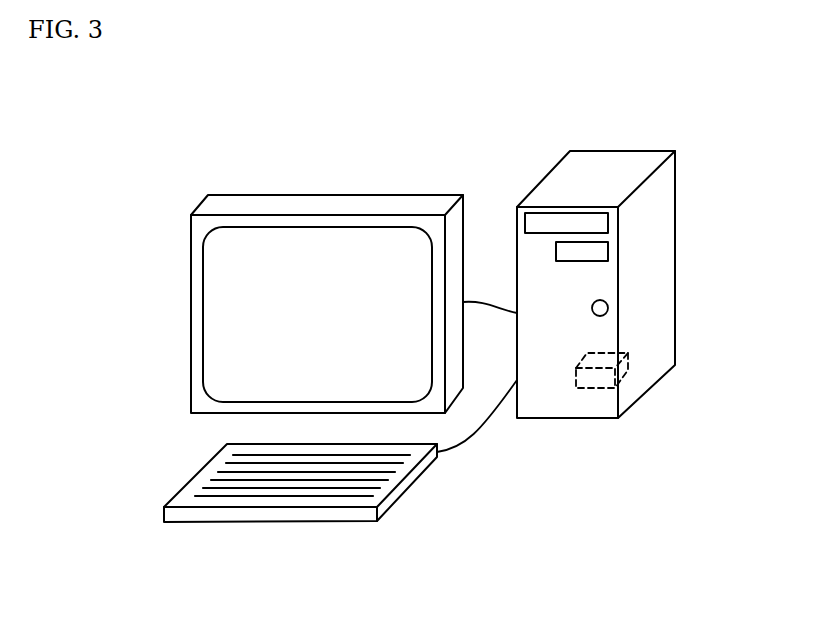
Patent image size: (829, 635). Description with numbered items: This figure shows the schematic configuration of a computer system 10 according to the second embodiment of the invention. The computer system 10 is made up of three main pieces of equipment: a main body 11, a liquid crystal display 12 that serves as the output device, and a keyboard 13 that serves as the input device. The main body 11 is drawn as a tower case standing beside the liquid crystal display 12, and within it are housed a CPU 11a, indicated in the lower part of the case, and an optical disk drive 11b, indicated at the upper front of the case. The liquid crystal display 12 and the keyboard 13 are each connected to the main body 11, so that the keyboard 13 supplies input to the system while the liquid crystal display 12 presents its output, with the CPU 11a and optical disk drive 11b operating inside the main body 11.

The computer system 10 is at (467, 167).
The main body 11 is at (612, 153).
The CPU 11a is at (630, 363).
The optical disk drive 11b is at (605, 223).
The liquid crystal display 12 is at (322, 203).
The keyboard 13 is at (407, 485).